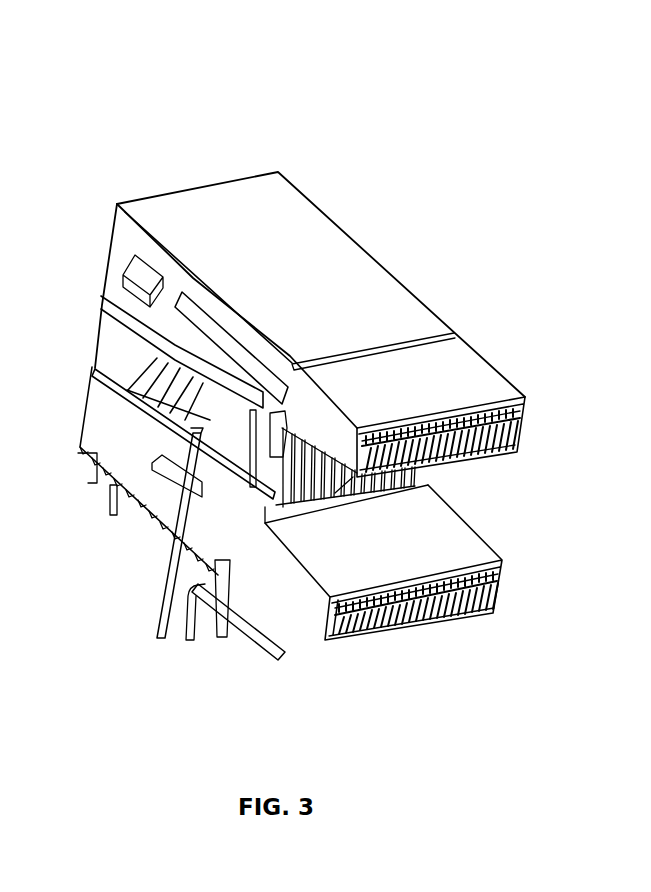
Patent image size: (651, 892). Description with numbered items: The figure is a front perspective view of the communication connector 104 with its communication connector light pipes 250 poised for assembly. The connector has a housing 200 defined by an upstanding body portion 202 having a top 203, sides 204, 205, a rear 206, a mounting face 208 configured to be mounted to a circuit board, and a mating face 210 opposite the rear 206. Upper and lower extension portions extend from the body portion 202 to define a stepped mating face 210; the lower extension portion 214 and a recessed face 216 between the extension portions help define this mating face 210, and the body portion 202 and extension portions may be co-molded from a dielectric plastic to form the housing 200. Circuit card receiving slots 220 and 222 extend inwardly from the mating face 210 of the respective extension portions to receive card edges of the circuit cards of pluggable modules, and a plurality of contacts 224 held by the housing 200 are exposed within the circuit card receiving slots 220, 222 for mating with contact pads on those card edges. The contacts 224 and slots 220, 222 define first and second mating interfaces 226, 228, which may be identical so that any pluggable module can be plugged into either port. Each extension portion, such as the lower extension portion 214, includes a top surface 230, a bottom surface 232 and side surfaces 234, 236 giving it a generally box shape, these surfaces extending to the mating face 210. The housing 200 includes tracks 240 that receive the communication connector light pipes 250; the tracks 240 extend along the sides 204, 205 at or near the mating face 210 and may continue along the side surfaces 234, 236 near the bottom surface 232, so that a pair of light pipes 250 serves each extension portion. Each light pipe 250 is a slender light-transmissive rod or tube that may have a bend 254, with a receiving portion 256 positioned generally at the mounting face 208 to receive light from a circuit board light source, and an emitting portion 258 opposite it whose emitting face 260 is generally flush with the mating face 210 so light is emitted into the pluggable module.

The communication connector 104 is at (187, 151).
The housing 200 is at (308, 226).
The upstanding body portion 202 is at (378, 297).
The top 203 is at (342, 257).
The side 204 is at (438, 315).
The side 205 is at (117, 461).
The rear 206 is at (190, 195).
The mounting face 208 is at (144, 553).
The mating face 210 is at (448, 624).
The lower extension portion 214 is at (484, 385).
The recessed face 216 is at (452, 547).
The circuit card receiving slot 220 is at (520, 428).
The circuit card receiving slot 222 is at (495, 588).
The contacts 224 is at (406, 626).
The first mating interface 226 is at (482, 452).
The second mating interface 228 is at (468, 616).
The top surface 230 is at (438, 367).
The bottom surface 232 is at (437, 467).
The side surface 234 is at (512, 396).
The side surface 236 is at (116, 308).
The tracks 240 is at (103, 356).
The communication connector light pipes 250 is at (142, 528).
The bend 254 is at (268, 425).
The receiving portion 256 is at (200, 634).
The emitting portion 258 is at (260, 654).
The emitting face 260 is at (281, 655).